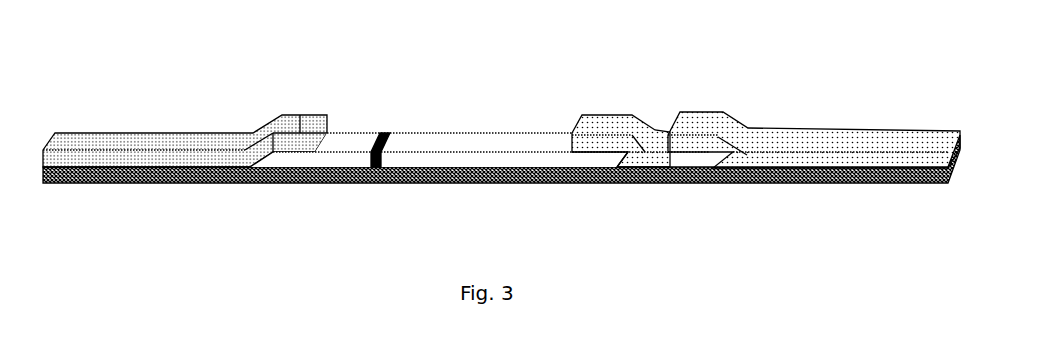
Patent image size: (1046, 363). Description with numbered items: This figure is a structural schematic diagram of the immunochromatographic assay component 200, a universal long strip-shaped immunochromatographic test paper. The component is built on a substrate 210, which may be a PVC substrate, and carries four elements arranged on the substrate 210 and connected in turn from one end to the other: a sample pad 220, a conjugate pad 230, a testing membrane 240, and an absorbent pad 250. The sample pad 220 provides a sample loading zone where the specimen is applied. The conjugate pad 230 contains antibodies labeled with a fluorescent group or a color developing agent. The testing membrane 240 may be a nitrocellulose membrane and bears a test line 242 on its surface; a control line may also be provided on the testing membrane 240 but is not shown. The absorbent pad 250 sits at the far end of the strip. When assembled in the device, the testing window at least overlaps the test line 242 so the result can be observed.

The immunochromatographic assay component 200 is at (145, 44).
The substrate 210 is at (522, 183).
The sample pad 220 is at (793, 130).
The conjugate pad 230 is at (632, 130).
The testing membrane 240 is at (482, 140).
The test line 242 is at (386, 133).
The absorbent pad 250 is at (300, 115).